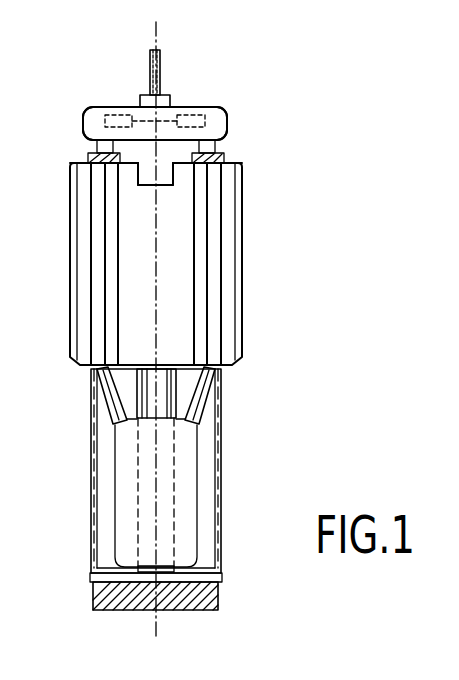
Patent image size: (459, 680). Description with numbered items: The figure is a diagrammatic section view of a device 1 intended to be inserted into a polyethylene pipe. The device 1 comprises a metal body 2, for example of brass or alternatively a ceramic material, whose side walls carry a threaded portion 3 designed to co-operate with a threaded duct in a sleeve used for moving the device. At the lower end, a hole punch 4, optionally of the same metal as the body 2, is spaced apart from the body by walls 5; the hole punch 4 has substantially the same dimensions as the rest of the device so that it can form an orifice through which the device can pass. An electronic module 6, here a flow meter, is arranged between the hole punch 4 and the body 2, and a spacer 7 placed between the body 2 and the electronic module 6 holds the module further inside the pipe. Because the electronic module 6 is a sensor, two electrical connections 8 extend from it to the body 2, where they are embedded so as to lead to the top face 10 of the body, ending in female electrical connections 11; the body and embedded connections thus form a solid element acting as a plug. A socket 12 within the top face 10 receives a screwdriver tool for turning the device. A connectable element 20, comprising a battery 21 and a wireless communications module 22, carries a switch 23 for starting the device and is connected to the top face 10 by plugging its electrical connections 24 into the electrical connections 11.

The device 1 is at (258, 258).
The metal body 2 is at (181, 300).
The threaded portion 3 is at (243, 283).
The hole punch 4 is at (116, 603).
The walls 5 is at (91, 502).
The electronic module 6 is at (163, 487).
The spacer 7 is at (160, 390).
The electrical connections 8 is at (103, 315).
The top face 10 is at (187, 162).
The female electrical connections 11 is at (90, 167).
The socket 12 is at (165, 188).
The connectable element 20 is at (86, 110).
The battery 21 is at (113, 106).
The wireless communications module 22 is at (189, 107).
The switch 23 is at (151, 57).
The electrical connections 24 is at (96, 145).